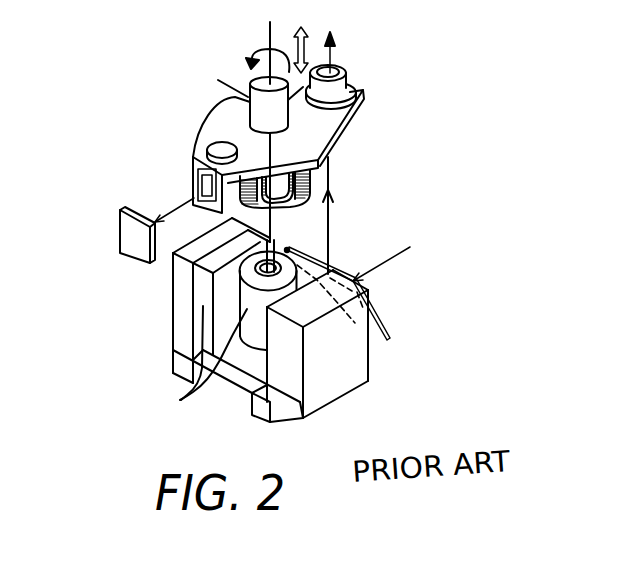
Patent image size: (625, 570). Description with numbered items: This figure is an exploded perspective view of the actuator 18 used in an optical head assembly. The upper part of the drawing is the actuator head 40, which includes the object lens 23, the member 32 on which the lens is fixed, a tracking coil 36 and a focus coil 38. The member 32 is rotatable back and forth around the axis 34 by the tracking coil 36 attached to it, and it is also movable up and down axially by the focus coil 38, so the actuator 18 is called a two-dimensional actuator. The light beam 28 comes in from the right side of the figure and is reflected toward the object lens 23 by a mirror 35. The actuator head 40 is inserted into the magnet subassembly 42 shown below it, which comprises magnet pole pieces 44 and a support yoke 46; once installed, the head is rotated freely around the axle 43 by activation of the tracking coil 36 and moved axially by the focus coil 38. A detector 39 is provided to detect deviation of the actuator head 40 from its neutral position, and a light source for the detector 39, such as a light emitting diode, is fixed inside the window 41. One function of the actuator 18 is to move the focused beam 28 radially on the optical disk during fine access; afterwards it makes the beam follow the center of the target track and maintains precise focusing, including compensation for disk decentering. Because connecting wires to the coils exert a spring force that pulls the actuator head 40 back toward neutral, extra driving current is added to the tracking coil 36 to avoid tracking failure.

The actuator 18 is at (407, 107).
The actuator head 40 is at (426, 72).
The member 32 is at (315, 129).
The axis 34 is at (270, 31).
The object lens 23 is at (334, 64).
The window 41 is at (192, 178).
The detector 39 is at (130, 236).
The tracking coil 36 is at (313, 180).
The focus coil 38 is at (300, 208).
The axle 43 is at (278, 262).
The magnet subassembly 42 is at (164, 337).
The magnet pole pieces 44 is at (221, 337).
The support yoke 46 is at (337, 386).
The mirror 35 is at (388, 336).
The light beam 28 is at (368, 272).